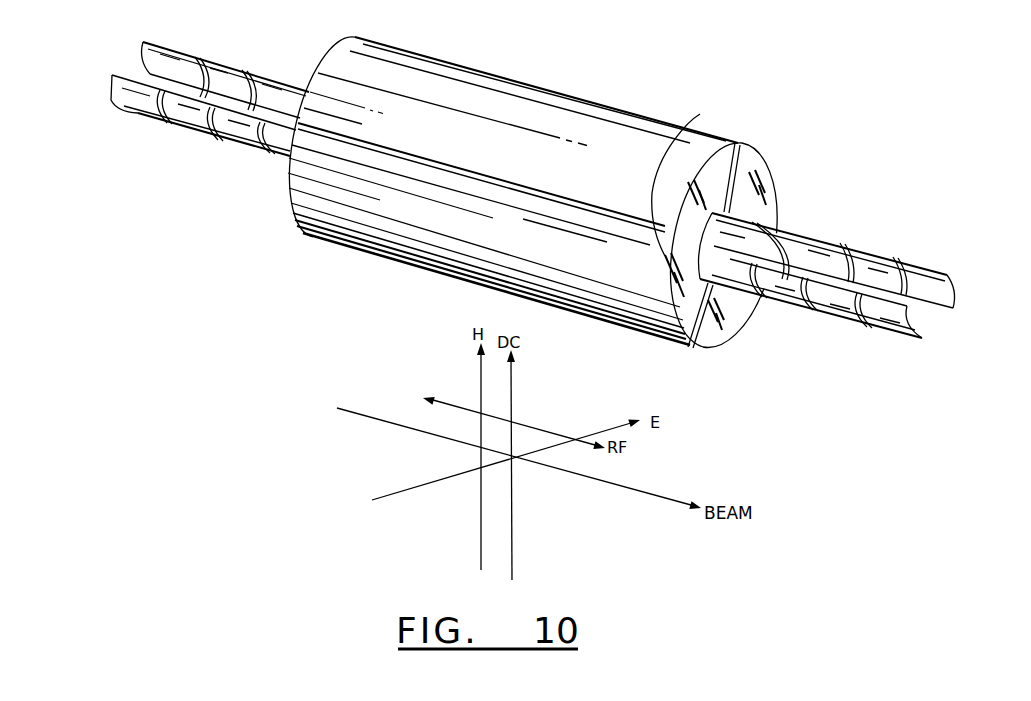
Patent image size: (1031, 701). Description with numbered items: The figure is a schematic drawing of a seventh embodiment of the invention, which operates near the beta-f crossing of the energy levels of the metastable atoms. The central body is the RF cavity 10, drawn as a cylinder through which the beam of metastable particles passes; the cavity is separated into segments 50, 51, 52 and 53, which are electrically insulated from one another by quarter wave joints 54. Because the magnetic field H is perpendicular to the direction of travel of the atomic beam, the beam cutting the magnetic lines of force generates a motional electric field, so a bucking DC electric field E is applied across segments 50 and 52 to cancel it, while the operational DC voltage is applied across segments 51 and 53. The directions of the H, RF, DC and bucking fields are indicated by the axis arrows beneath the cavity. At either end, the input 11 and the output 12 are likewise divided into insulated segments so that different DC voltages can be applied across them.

The RF cavity 10 is at (620, 84).
The input 11 is at (123, 63).
The output 12 is at (952, 322).
The segment 50 is at (662, 277).
The segment 51 is at (740, 146).
The segment 52 is at (772, 168).
The segment 53 is at (741, 321).
The quarter wave joints 54 is at (668, 372).